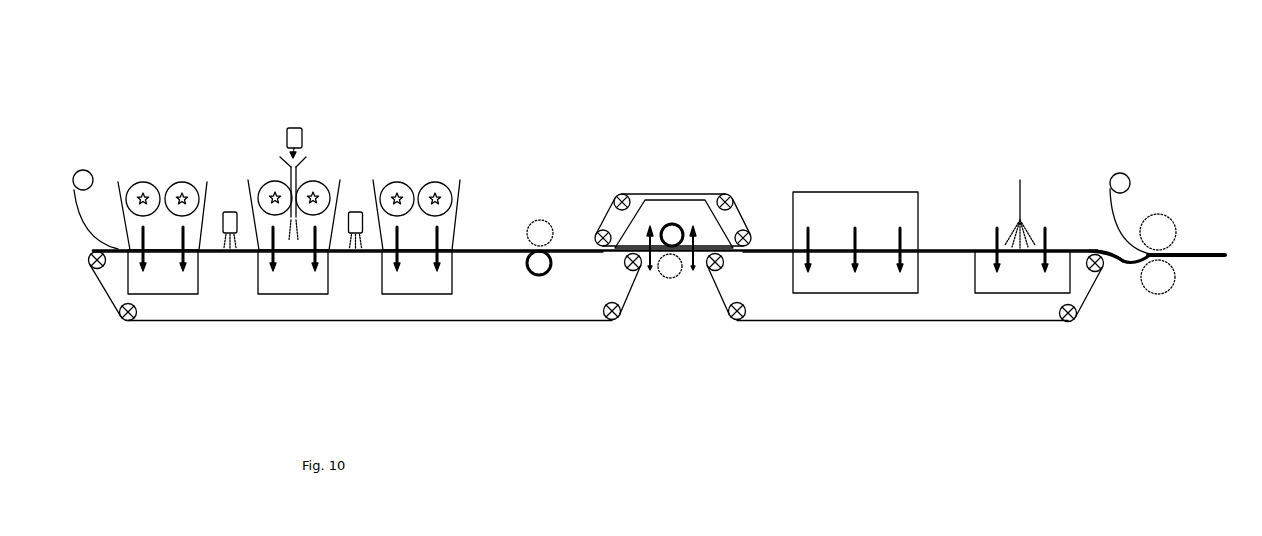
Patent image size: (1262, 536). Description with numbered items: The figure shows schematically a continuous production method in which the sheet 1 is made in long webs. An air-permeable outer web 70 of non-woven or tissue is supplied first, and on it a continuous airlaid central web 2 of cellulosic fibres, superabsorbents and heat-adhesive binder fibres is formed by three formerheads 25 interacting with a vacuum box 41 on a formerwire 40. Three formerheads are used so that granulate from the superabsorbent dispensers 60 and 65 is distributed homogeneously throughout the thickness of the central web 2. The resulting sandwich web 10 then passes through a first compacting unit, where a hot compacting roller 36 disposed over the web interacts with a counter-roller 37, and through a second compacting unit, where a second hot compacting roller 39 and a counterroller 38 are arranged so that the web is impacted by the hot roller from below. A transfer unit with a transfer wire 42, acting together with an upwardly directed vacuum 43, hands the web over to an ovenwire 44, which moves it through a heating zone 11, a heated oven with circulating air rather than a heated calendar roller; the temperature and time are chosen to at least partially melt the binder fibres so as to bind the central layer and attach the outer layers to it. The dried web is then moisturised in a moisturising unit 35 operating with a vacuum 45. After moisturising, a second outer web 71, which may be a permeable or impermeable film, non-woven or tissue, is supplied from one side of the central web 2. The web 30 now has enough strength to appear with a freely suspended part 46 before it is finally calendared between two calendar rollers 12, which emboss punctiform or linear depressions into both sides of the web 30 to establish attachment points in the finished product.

The sheet 1 is at (1220, 245).
The central web 2 is at (495, 243).
The sandwich web 10 is at (578, 254).
The heating zone 11 is at (873, 275).
The calendar rollers 12 is at (1160, 232).
The formerhead 25 is at (182, 182).
The web 30 is at (1083, 247).
The moisturising unit 35 is at (1014, 222).
The hot compacting roller 36 is at (548, 222).
The counter-roller 37 is at (533, 277).
The counterroller 38 is at (678, 222).
The second hot compacting roller 39 is at (678, 278).
The formerwire 40 is at (107, 293).
The vacuum box 41 is at (402, 278).
The transfer wire 42 is at (642, 190).
The upwardly directed vacuum 43 is at (707, 233).
The ovenwire 44 is at (863, 327).
The vacuum 45 is at (1015, 282).
The freely suspended part 46 is at (1113, 270).
The superabsorbent dispenser 60 is at (358, 211).
The superabsorbent dispenser 65 is at (294, 126).
The outer web 70 is at (86, 170).
The outer web 71 is at (1128, 173).